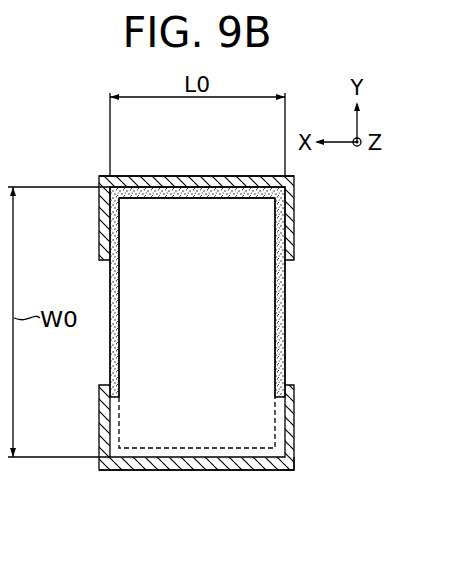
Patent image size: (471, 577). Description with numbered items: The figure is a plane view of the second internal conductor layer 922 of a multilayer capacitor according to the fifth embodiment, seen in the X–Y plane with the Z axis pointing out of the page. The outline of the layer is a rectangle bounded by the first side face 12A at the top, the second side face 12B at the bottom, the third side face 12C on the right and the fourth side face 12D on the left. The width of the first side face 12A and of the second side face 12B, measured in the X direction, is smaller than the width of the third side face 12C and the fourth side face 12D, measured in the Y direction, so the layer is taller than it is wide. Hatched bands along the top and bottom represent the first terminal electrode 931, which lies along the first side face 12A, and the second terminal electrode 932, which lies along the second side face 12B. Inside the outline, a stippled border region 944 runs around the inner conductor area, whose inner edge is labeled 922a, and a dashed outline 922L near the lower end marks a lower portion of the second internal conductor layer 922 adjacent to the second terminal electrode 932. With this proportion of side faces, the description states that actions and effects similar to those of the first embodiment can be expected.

The first terminal electrode 931 is at (163, 176).
The first side face 12A is at (238, 176).
The adhesive/stippled layer 944 is at (279, 357).
The inner surface of housing 922a is at (210, 223).
The third side face 12C is at (285, 320).
The fourth side face 12D is at (110, 283).
The second terminal electrode 932 is at (143, 461).
The second side face 12B is at (242, 462).
The housing cavity 922 is at (192, 396).
The lower corner portion of housing 922L is at (294, 470).